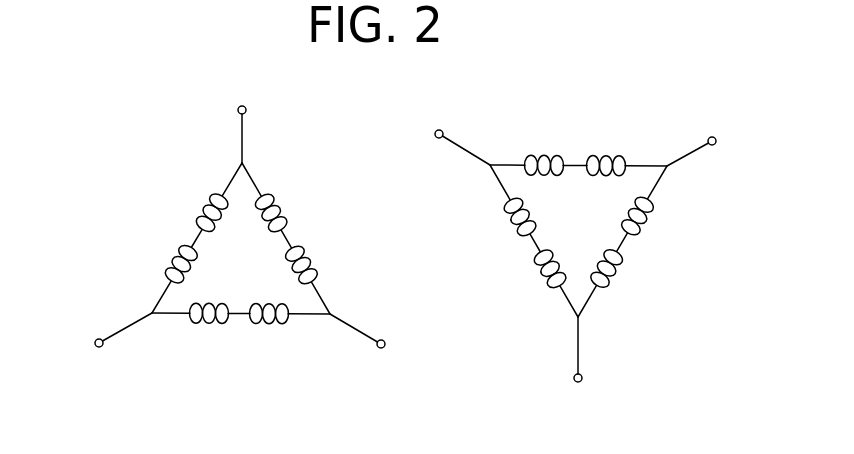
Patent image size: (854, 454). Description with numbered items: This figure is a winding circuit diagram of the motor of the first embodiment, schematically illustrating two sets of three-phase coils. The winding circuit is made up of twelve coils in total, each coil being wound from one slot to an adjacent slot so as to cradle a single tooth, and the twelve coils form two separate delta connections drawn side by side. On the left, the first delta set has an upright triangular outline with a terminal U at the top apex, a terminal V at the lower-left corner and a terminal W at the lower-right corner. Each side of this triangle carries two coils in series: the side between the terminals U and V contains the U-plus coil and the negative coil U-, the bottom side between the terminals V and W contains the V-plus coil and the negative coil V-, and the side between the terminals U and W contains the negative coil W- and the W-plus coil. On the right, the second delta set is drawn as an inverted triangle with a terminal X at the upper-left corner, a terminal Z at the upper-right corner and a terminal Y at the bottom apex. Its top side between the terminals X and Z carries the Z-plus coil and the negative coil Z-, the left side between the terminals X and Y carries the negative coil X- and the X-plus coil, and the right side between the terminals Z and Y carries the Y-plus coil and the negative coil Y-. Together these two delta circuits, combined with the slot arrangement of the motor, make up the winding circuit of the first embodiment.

The U-phase terminal U is at (241, 116).
The V-phase terminal V is at (110, 345).
The W-phase terminal W is at (370, 346).
The U− coil U- is at (163, 264).
The V− coil V- is at (269, 333).
The W− coil W- is at (289, 213).
The X-phase terminal X is at (449, 140).
The Y-phase terminal Y is at (576, 367).
The Z-phase terminal Z is at (704, 141).
The X− coil X- is at (501, 218).
The Y− coil Y- is at (622, 272).
The Z− coil Z- is at (606, 147).